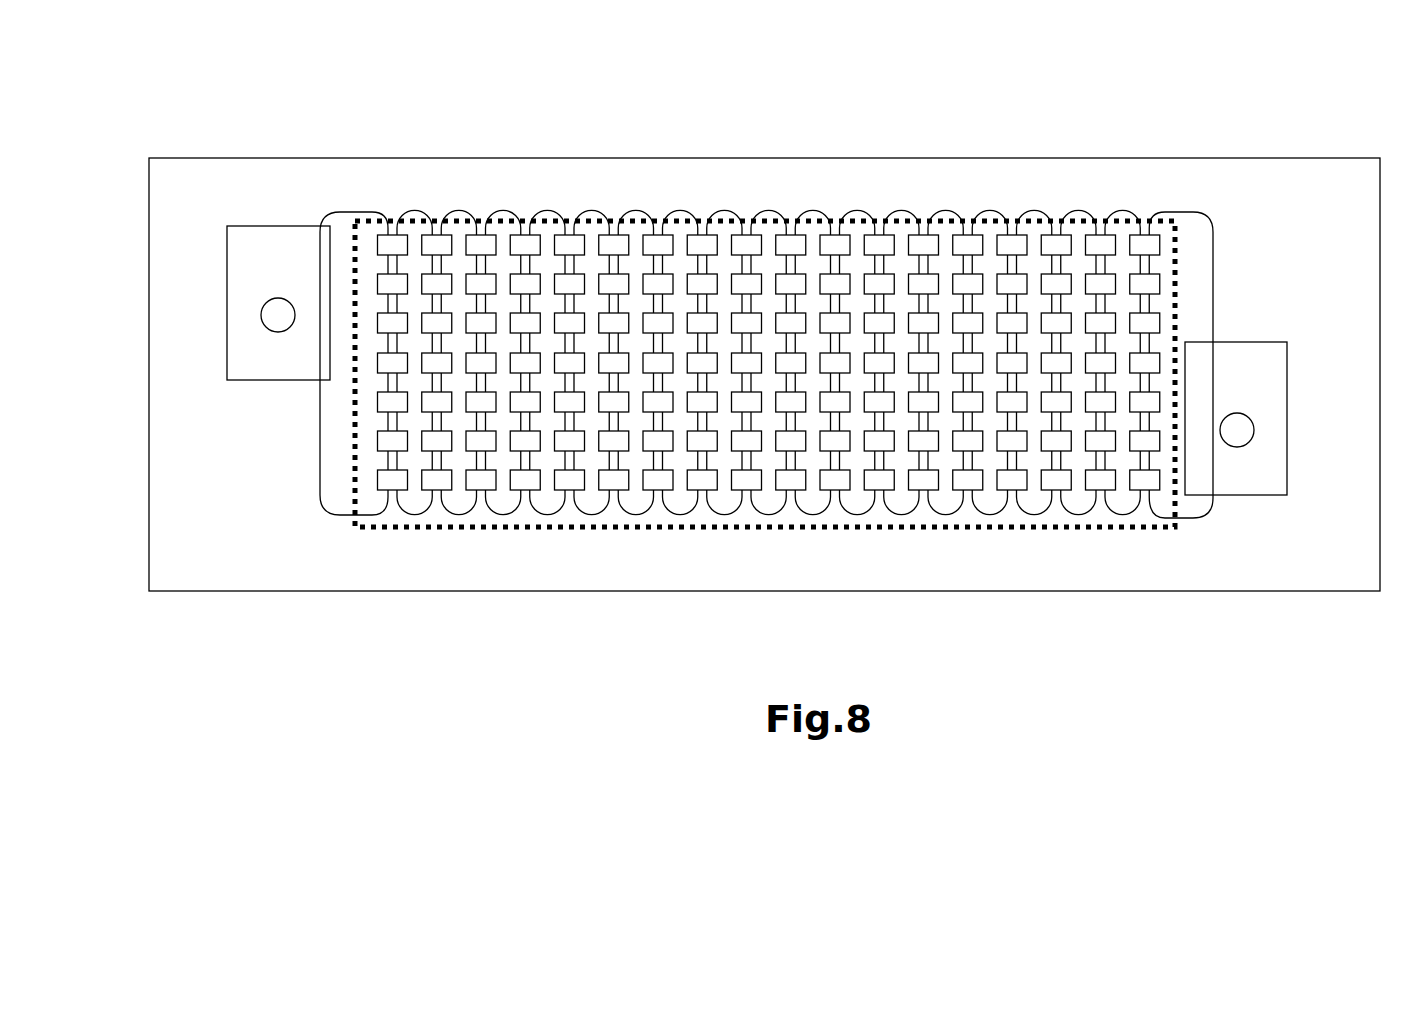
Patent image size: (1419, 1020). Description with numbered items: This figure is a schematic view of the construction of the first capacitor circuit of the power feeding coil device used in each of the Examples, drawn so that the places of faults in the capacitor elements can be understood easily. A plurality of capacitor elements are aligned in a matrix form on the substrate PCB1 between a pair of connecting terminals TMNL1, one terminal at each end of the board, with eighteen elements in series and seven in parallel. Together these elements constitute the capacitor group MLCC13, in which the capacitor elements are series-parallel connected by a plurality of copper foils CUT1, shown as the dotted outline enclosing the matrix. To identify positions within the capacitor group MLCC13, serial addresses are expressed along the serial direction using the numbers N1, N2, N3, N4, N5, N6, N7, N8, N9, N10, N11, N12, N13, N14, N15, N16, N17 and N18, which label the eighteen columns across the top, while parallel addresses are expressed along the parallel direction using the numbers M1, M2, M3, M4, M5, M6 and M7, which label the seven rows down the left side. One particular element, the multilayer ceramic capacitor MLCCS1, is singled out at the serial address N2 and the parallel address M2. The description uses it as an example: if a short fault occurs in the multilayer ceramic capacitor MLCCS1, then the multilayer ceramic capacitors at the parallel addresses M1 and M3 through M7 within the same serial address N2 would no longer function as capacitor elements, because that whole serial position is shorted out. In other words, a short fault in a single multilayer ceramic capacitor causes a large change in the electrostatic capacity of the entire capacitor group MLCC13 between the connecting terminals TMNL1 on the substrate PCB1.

The substrate PCB1 is at (460, 156).
The connecting terminal TMNL1 is at (243, 226).
The copper foil CUT1 is at (395, 505).
The capacitor group MLCC13 is at (515, 520).
The multilayer ceramic capacitor MLCCS1 is at (435, 282).
The serial address N1 is at (392, 344).
The serial address N2 is at (437, 344).
The serial address N3 is at (481, 344).
The serial address N4 is at (525, 344).
The serial address N5 is at (569, 344).
The serial address N6 is at (614, 344).
The serial address N7 is at (658, 344).
The serial address N8 is at (702, 344).
The serial address N9 is at (746, 344).
The serial address N10 is at (791, 344).
The serial address N11 is at (835, 344).
The serial address N12 is at (879, 344).
The serial address N13 is at (923, 344).
The serial address N14 is at (968, 344).
The serial address N15 is at (1012, 344).
The serial address N16 is at (1056, 344).
The serial address N17 is at (1100, 344).
The serial address N18 is at (1145, 344).
The parallel address M1 is at (674, 247).
The parallel address M2 is at (674, 284).
The parallel address M3 is at (674, 323).
The parallel address M4 is at (674, 363).
The parallel address M5 is at (674, 402).
The parallel address M6 is at (674, 441).
The parallel address M7 is at (674, 481).